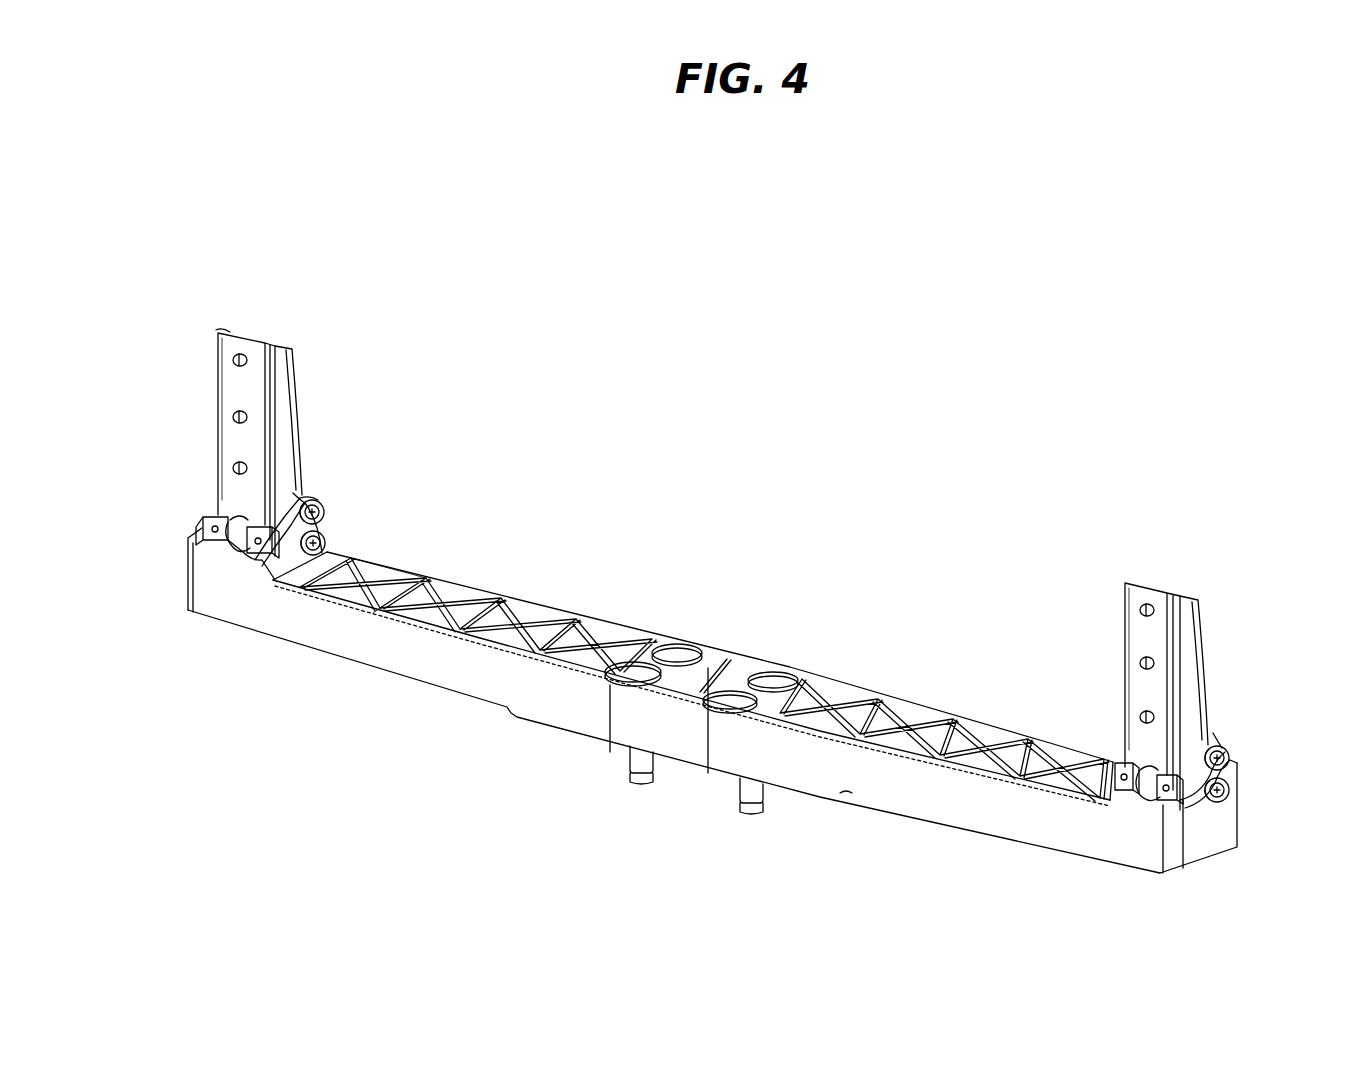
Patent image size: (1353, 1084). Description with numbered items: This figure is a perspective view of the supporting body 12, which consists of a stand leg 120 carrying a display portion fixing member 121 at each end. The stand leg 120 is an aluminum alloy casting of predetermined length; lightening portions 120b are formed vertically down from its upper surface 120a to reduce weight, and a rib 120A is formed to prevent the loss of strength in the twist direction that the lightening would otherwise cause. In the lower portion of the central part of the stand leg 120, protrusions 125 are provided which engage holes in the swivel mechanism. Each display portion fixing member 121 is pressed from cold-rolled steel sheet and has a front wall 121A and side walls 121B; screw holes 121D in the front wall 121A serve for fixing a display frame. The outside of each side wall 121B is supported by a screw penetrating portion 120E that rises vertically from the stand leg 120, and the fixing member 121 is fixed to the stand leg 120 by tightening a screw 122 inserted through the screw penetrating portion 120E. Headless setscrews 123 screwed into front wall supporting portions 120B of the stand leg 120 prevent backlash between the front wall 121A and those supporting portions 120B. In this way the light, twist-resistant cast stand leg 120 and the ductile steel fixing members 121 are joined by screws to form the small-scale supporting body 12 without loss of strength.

The supporting body 12 is at (681, 525).
The stand leg 120 is at (588, 612).
The rib 120A is at (450, 587).
The front wall supporting portion 120B is at (203, 522).
The screw penetrating portion 120E is at (293, 493).
The upper surface 120a is at (373, 613).
The lightening portion 120b is at (701, 654).
The display portion fixing member 121 is at (247, 333).
The front wall 121A is at (222, 350).
The side wall 121B is at (222, 333).
The screw hole 121D is at (232, 362).
The screw 122 is at (322, 503).
The setscrew 123 is at (193, 537).
The protrusion 125 is at (643, 787).